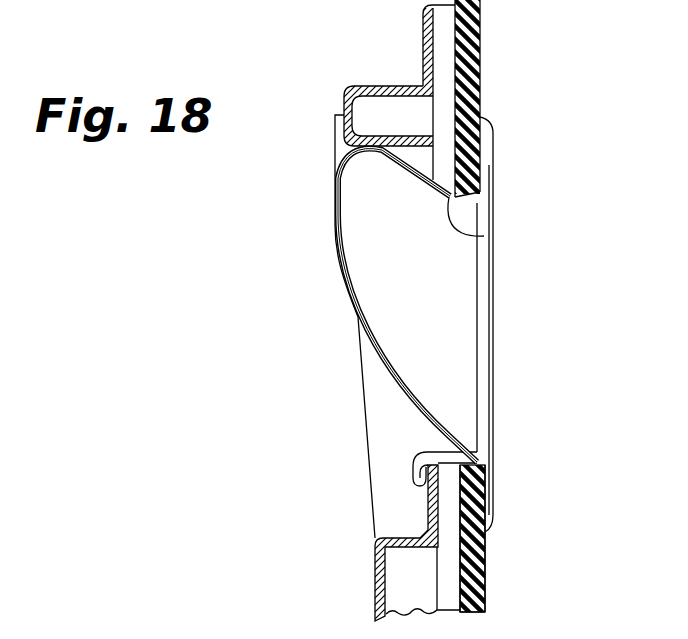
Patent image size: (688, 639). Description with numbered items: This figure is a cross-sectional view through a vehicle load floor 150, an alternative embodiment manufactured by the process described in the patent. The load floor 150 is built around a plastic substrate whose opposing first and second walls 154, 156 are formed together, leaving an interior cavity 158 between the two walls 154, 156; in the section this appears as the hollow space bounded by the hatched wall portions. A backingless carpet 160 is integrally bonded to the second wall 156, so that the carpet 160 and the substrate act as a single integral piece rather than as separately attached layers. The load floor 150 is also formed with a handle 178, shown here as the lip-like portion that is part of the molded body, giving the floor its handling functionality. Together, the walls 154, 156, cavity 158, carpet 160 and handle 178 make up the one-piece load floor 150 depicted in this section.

The vehicle load floor 150 is at (318, 328).
The first wall 154 is at (373, 602).
The second wall 156 is at (451, 612).
The interior cavity 158 is at (397, 566).
The backingless carpet 160 is at (487, 580).
The handle 178 is at (470, 236).